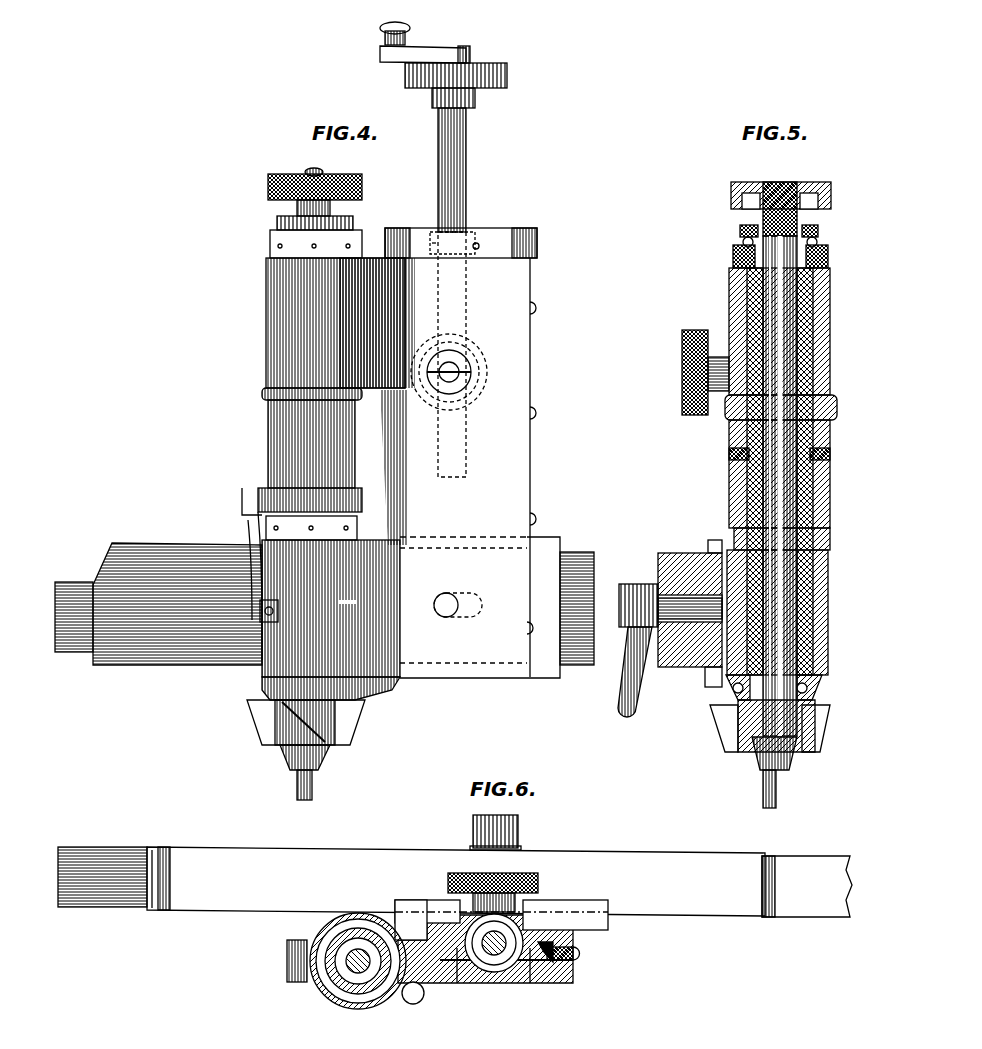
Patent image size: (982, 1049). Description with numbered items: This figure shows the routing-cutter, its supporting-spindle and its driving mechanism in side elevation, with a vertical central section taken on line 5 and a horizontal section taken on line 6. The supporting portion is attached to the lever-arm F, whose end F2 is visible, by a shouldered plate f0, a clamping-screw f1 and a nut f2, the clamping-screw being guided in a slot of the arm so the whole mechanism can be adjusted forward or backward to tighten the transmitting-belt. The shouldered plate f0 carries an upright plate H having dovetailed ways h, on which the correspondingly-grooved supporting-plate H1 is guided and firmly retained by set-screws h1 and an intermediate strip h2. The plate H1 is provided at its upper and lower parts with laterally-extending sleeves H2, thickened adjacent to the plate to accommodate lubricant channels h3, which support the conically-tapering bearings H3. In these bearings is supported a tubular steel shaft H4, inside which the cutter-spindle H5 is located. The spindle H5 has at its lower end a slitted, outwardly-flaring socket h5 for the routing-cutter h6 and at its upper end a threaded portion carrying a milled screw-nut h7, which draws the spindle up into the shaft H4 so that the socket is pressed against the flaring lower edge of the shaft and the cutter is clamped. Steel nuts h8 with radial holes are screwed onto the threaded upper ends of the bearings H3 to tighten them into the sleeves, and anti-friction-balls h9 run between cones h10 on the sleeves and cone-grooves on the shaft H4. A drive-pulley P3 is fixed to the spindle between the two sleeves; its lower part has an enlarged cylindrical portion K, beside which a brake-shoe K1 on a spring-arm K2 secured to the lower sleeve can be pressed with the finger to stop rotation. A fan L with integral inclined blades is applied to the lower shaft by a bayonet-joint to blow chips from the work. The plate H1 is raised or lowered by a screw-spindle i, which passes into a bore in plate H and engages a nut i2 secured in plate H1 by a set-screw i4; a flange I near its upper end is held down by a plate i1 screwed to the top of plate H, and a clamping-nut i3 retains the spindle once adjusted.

In FIG. 4, the section line 5 5 is at (318, 122).
In FIG. 4, the section line 6 6 is at (615, 263).
In FIG. 4, the screw-spindle i is at (466, 150).
In FIG. 6, the screw-spindle i is at (493, 950).
In FIG. 4, the plate i1 is at (478, 250).
In FIG. 4, the nut i2 is at (462, 358).
In FIG. 5, the clamping-nut i3 is at (705, 373).
In FIG. 4, the set-screw i4 is at (455, 382).
In FIG. 4, the flange I is at (432, 250).
In FIG. 4, the upright plate H is at (422, 250).
In FIG. 6, the upright plate H is at (440, 938).
In FIG. 4, the supporting-plate H1 is at (458, 452).
In FIG. 6, the supporting-plate H1 is at (500, 985).
In FIG. 4, the laterally-extending sleeves H2 is at (284, 330).
In FIG. 5, the laterally-extending sleeves H2 is at (822, 322).
In FIG. 6, the laterally-extending sleeves H2 is at (352, 975).
In FIG. 5, the conically-tapering bearings H3 is at (815, 346).
In FIG. 6, the conically-tapering bearings H3 is at (315, 985).
In FIG. 5, the tubular steel shaft H4 is at (797, 376).
In FIG. 6, the tubular steel shaft H4 is at (357, 968).
In FIG. 4, the cutter-spindle H5 is at (315, 189).
In FIG. 5, the cutter-spindle H5 is at (836, 546).
In FIG. 6, the dovetailed ways h is at (456, 985).
In FIG. 4, the set-screws h1 is at (546, 415).
In FIG. 6, the set-screws h1 is at (580, 958).
In FIG. 6, the intermediate strip h2 is at (552, 964).
In FIG. 4, the bore holes or channels h3 is at (371, 432).
In FIG. 6, the bore holes or channels h3 is at (413, 997).
In FIG. 4, the slitted and outwardly-flaring socket h5 is at (290, 758).
In FIG. 5, the slitted and outwardly-flaring socket h5 is at (760, 768).
In FIG. 4, the routing-cutter h6 is at (312, 785).
In FIG. 5, the routing-cutter h6 is at (776, 800).
In FIG. 4, the milled screw-nut h7 is at (268, 187).
In FIG. 5, the milled screw-nut h7 is at (791, 199).
In FIG. 4, the steel nuts h8 is at (270, 246).
In FIG. 5, the steel nuts h8 is at (733, 252).
In FIG. 5, the anti-friction-balls h9 is at (742, 240).
In FIG. 4, the cones h10 is at (268, 690).
In FIG. 5, the cones h10 is at (742, 226).
In FIG. 4, the enlarged cylindrical portion K is at (310, 500).
In FIG. 4, the brake-shoe K1 is at (239, 501).
In FIG. 4, the spring-arm K2 is at (255, 580).
In FIG. 4, the fan L is at (282, 728).
In FIG. 4, the drive-pulley P3 is at (315, 450).
In FIG. 5, the drive-pulley P3 is at (729, 470).
In FIG. 4, the lever-arm F is at (565, 560).
In FIG. 5, the lever-arm F is at (680, 560).
In FIG. 6, the lever-arm F is at (808, 905).
In FIG. 4, the lever-arm end F2 is at (70, 605).
In FIG. 6, the lever-arm end F2 is at (100, 888).
In FIG. 4, the shouldered plate f0 is at (537, 613).
In FIG. 5, the shouldered plate f0 is at (724, 538).
In FIG. 6, the shouldered plate f0 is at (404, 912).
In FIG. 4, the clamping-screw f1 is at (450, 605).
In FIG. 5, the clamping-screw f1 is at (690, 608).
In FIG. 6, the clamping-screw f1 is at (493, 820).
In FIG. 5, the nut f2 is at (638, 641).
In FIG. 6, the nut f2 is at (518, 846).